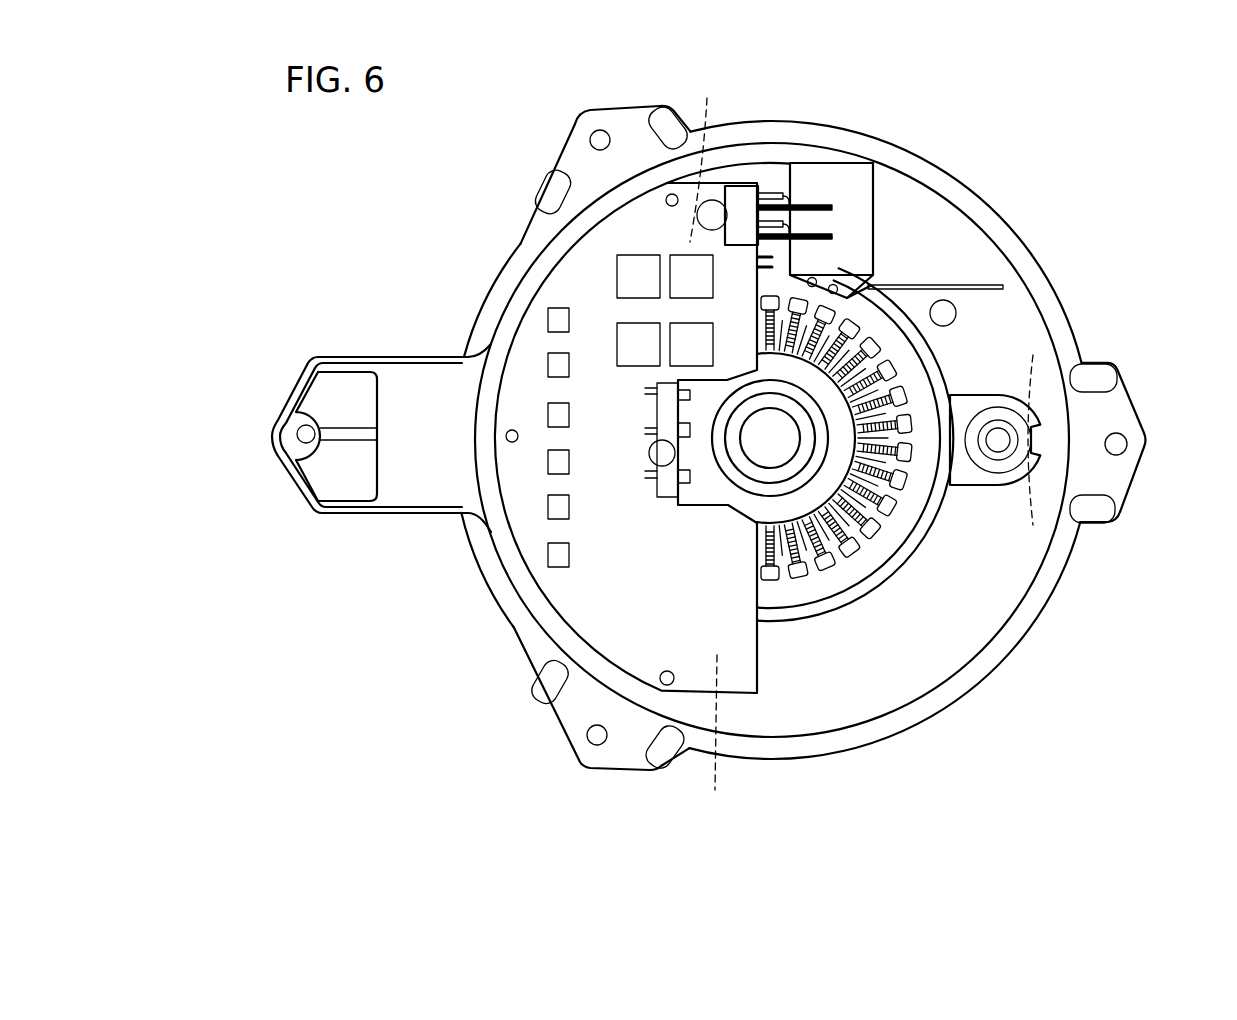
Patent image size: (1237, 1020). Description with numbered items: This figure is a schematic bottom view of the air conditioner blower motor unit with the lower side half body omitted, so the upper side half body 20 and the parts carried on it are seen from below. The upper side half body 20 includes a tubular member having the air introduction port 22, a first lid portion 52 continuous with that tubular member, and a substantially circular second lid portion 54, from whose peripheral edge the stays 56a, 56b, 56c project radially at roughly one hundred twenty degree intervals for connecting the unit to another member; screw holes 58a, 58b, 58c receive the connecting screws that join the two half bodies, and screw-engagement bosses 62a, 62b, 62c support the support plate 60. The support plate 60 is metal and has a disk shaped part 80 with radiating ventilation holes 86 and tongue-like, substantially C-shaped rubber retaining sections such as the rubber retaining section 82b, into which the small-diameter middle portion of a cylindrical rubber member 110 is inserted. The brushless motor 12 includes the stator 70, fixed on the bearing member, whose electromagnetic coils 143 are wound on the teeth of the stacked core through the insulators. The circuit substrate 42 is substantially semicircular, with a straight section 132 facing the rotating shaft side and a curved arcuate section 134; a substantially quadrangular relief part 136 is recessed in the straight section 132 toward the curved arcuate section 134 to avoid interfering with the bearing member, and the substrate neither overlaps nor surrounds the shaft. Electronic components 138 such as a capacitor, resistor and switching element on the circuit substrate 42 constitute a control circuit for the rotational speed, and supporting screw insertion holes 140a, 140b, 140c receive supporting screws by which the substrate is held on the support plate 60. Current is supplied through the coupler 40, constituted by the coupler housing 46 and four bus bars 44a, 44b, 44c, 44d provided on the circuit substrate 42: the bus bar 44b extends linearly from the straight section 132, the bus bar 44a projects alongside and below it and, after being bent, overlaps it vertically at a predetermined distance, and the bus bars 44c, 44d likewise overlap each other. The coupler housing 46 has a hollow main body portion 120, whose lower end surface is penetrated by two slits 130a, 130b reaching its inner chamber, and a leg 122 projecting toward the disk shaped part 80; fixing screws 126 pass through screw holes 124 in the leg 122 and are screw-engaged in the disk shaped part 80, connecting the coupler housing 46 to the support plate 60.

The brushless motor 12 is at (860, 461).
The upper side half body 20 is at (340, 450).
The air introduction port 22 is at (343, 374).
The coupler 40 is at (946, 192).
The circuit substrate 42 is at (600, 415).
The bus bar 44a is at (771, 193).
The bus bar 44b is at (856, 200).
The bus bar 44c is at (786, 224).
The bus bar 44d is at (835, 237).
The coupler housing 46 is at (946, 233).
The first lid portion 52 is at (340, 422).
The second lid portion 54 is at (962, 688).
The stay 56a is at (580, 152).
The stay 56b is at (1148, 440).
The stay 56c is at (568, 722).
The screw hole 58a is at (285, 440).
The screw hole 58b is at (1005, 288).
The screw hole 58c is at (756, 646).
The support plate 60 is at (847, 587).
The screw-engagement boss 62a is at (709, 159).
The screw-engagement boss 62b is at (1035, 420).
The screw-engagement boss 62c is at (718, 736).
The stator 70 is at (812, 455).
The disk shaped part 80 is at (925, 395).
The rubber retaining section 82b is at (1047, 427).
The ventilation hole 86 is at (912, 392).
The cylindrical rubber member 110 is at (1018, 470).
The main body portion 120 is at (835, 209).
The leg 122 is at (852, 284).
The screw hole 124 is at (660, 438).
The fixing screw 126 is at (956, 314).
The slit 130a is at (821, 205).
The slit 130b is at (840, 290).
The straight section 132 is at (760, 684).
The curved arcuate section 134 is at (510, 541).
The relief part 136 is at (690, 494).
The electronic component 138 is at (568, 318).
The supporting screw insertion hole 140a is at (667, 671).
The supporting screw insertion hole 140b is at (668, 205).
The supporting screw insertion hole 140c is at (506, 435).
The electromagnetic coil 143 is at (876, 449).